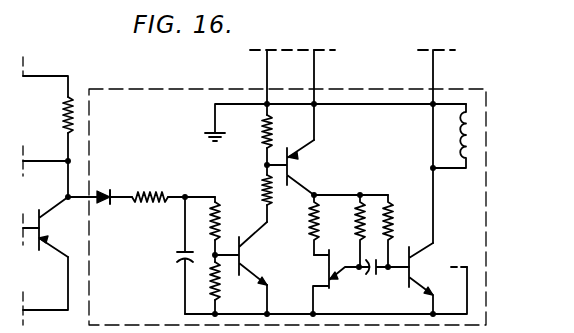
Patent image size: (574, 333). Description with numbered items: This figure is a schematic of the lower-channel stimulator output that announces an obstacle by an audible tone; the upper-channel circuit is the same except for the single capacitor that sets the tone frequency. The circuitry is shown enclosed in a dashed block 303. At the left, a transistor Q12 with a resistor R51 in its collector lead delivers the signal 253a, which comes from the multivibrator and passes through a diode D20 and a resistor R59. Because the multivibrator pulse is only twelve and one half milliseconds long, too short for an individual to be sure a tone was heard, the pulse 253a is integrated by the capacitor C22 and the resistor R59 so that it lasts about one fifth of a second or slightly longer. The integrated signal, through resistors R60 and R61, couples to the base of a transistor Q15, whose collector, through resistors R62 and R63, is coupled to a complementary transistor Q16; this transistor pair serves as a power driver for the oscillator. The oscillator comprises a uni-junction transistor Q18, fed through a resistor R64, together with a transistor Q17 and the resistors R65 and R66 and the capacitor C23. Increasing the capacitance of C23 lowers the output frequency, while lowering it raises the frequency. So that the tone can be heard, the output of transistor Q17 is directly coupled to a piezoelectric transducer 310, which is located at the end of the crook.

The dashed enclosure (circuit block) 303 is at (172, 88).
The piezoelectric transducer 310 is at (468, 96).
The signal 253a is at (74, 192).
The resistor R51 is at (65, 120).
The resistor R59 is at (146, 192).
The resistor R60 is at (220, 220).
The resistor R61 is at (220, 292).
The resistor R62 is at (264, 185).
The resistor R63 is at (264, 144).
The resistor R64 is at (310, 228).
The resistor R65 is at (366, 204).
The resistor R66 is at (390, 210).
The transistor Q12 is at (50, 245).
The transistor Q15 is at (244, 246).
The complementary transistor Q16 is at (297, 181).
The transistor Q17 is at (415, 251).
The uni-junction transistor Q18 is at (326, 286).
The diode D20 is at (104, 203).
The capacitor C22 is at (182, 259).
The capacitor C23 is at (372, 276).